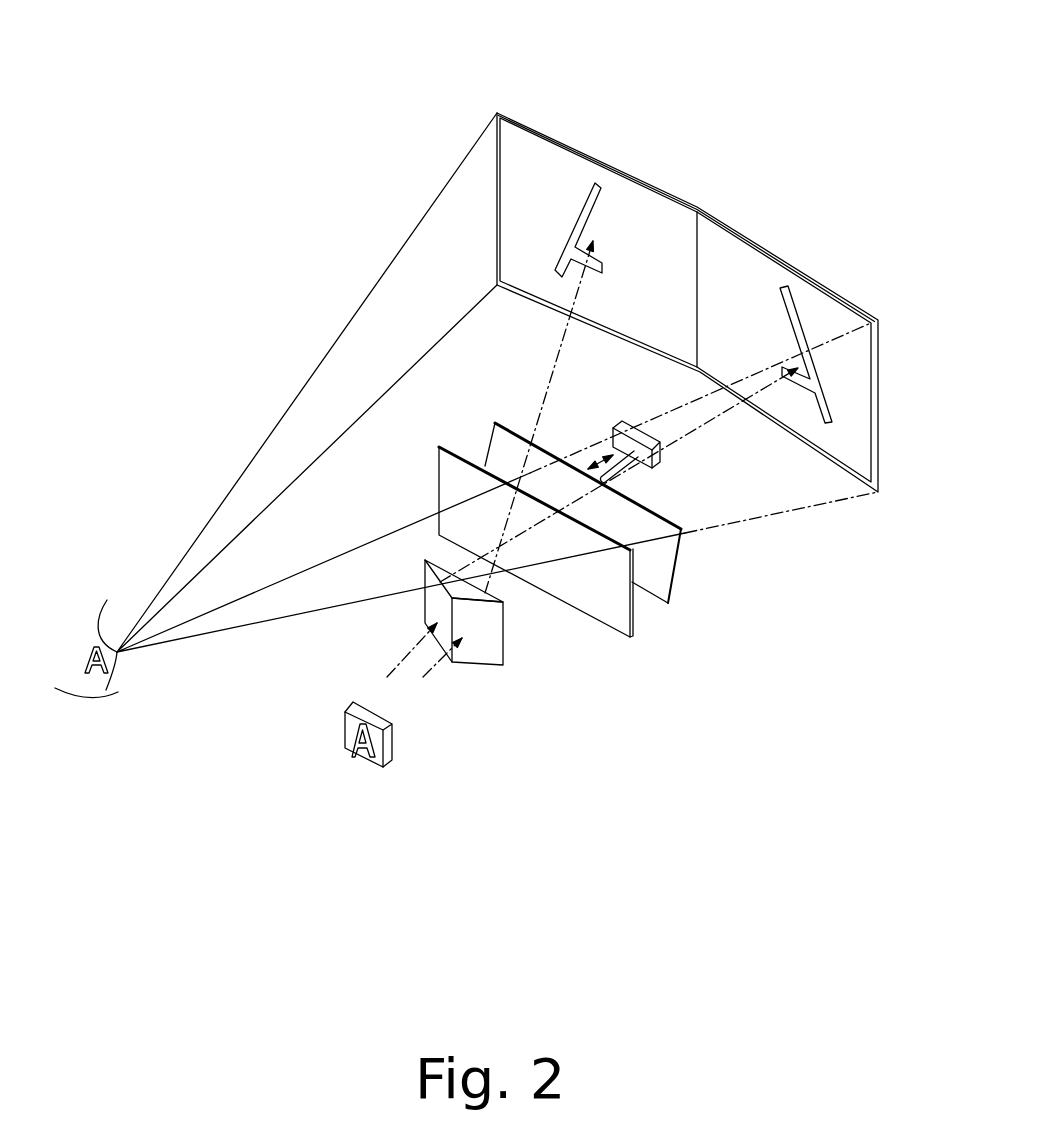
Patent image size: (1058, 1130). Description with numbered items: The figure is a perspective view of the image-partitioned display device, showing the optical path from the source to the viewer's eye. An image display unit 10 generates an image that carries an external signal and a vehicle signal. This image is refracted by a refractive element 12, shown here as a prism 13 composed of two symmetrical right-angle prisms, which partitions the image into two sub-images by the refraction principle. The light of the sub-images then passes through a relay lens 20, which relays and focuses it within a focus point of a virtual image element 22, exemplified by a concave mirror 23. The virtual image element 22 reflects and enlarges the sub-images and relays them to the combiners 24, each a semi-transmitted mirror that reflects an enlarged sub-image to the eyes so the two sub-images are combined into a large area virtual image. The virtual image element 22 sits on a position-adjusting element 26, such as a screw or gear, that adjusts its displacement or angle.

The image display unit 10 is at (383, 767).
The refractive element 12 is at (481, 680).
The prism 13 is at (503, 657).
The relay lens 20 is at (633, 625).
The virtual image element 22 is at (641, 549).
The concave mirror 23 is at (678, 565).
The combiner 24 is at (697, 210).
The position-adjusting element 26 is at (660, 457).